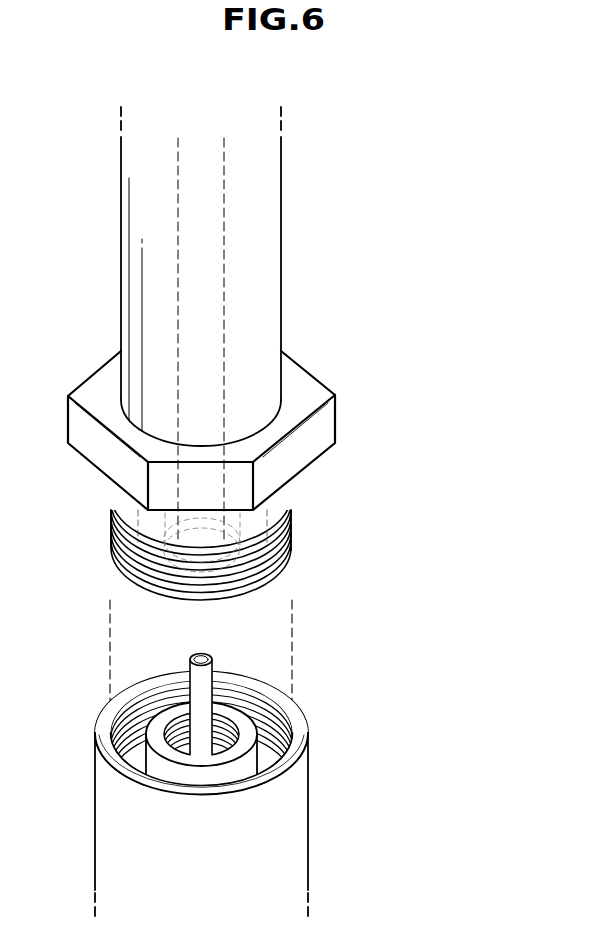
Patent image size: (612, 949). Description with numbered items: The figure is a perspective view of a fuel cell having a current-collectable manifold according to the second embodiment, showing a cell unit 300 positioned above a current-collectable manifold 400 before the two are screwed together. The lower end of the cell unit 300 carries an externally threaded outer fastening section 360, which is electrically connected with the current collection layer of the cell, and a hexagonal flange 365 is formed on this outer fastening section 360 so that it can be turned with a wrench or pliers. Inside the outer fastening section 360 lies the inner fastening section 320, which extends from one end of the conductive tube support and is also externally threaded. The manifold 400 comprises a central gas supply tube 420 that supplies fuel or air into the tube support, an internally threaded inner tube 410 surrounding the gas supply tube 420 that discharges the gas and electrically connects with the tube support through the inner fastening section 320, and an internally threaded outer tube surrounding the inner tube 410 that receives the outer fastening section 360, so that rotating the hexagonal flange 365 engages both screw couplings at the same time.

The cell unit 300 is at (262, 409).
The hexagonal flange 365 is at (322, 430).
The outer fastening section 360 is at (291, 523).
The inner fastening section 320 is at (233, 545).
The current-collectable manifold 400 is at (294, 787).
The gas supply tube 420 is at (200, 697).
The inner tube 410 is at (245, 738).